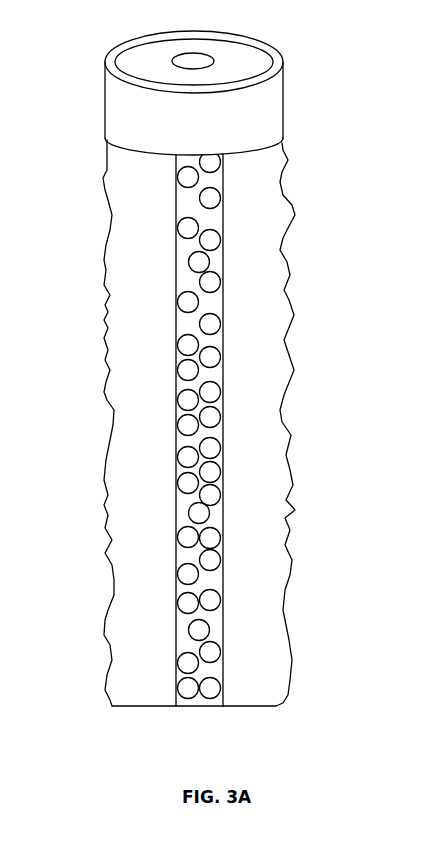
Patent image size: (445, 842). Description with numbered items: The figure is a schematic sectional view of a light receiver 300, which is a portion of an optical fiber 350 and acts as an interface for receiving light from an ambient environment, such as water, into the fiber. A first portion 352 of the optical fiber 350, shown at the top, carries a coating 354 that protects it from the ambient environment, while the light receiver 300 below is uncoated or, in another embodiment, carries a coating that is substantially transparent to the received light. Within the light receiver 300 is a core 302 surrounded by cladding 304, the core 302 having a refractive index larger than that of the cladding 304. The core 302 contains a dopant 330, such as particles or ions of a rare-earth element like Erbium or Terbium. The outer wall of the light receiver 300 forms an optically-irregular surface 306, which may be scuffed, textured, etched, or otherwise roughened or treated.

The optical fiber 350 is at (363, 30).
The first portion 352 is at (310, 142).
The coating 354 is at (286, 62).
The light receiver 300 is at (306, 697).
The core 302 is at (200, 708).
The cladding 304 is at (238, 707).
The optically-irregular surface 306 is at (110, 232).
The dopant 330 is at (180, 184).